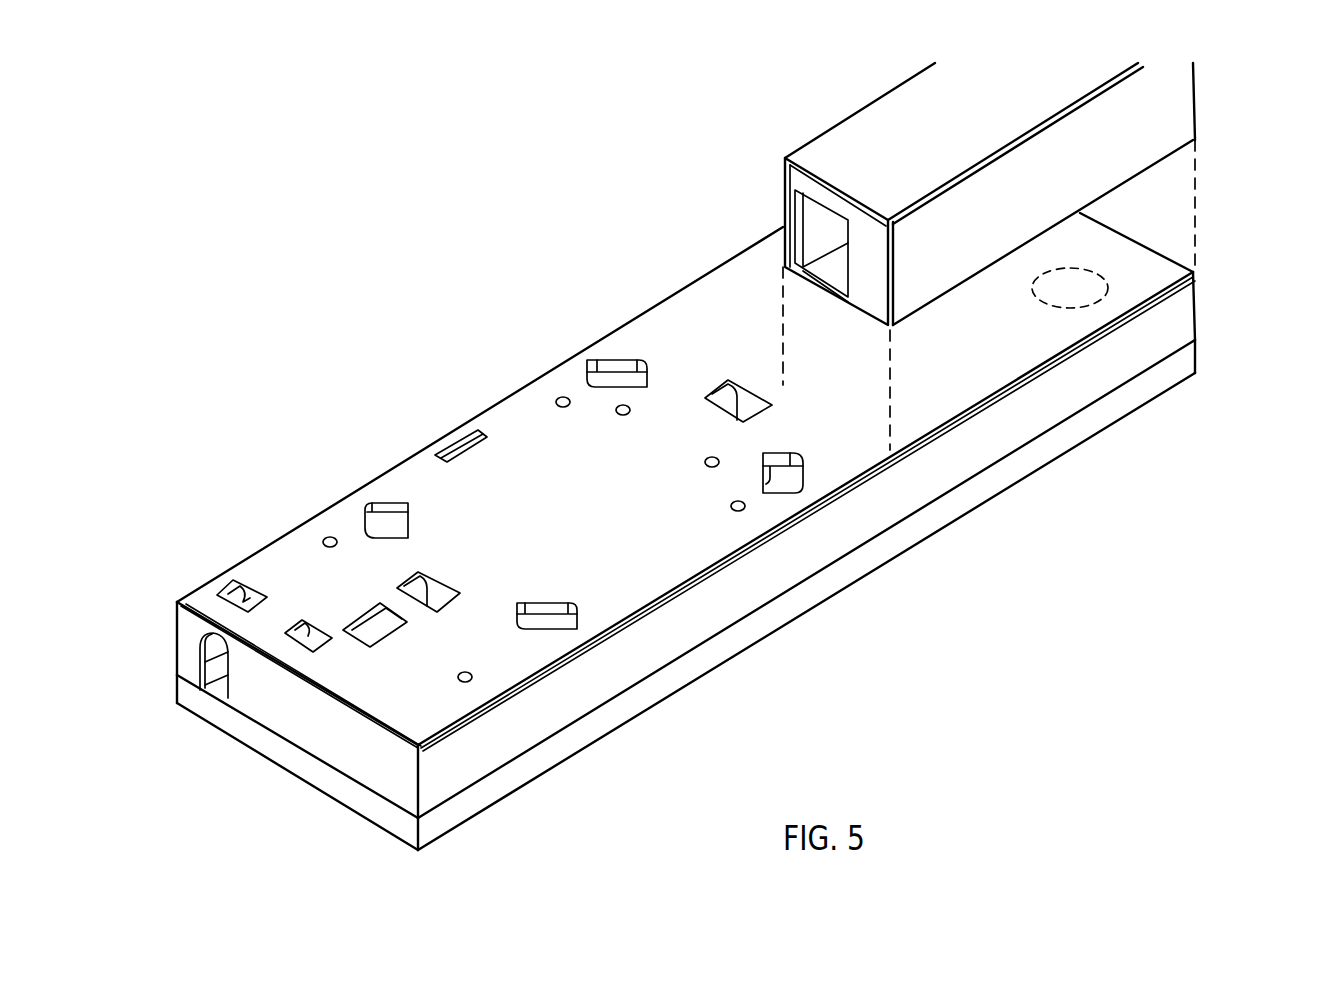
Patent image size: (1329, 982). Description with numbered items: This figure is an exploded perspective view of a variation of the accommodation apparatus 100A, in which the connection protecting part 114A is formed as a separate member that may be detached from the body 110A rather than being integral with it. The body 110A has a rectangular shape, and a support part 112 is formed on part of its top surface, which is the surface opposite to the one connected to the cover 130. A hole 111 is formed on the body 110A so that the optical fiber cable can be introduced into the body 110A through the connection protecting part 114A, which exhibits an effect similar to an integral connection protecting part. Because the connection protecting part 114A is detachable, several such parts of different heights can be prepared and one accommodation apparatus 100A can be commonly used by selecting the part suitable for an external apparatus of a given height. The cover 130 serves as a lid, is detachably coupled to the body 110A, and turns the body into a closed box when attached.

The accommodation apparatus 100A is at (448, 75).
The body 110A is at (723, 495).
The hole 111 is at (1082, 308).
The support part 112 is at (578, 482).
The connection protecting part 114A is at (903, 158).
The cover 130 is at (277, 748).